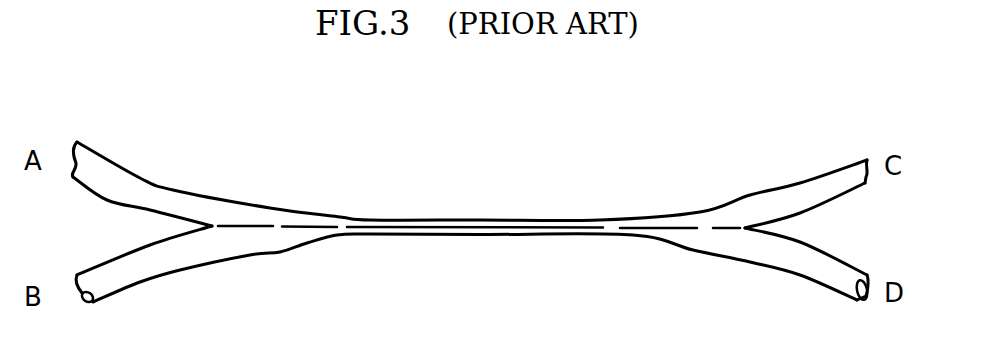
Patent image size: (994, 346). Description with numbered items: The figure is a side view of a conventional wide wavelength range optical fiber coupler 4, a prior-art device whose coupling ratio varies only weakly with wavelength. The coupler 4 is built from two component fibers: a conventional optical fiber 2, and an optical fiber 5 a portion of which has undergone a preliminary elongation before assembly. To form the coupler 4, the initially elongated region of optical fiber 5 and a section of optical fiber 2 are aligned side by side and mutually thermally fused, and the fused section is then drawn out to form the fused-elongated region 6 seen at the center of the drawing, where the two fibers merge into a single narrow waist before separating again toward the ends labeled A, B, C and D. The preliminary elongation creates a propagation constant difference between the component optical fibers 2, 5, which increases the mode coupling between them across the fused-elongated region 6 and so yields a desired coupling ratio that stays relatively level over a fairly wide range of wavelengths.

The optical fiber 2 is at (753, 197).
The wide wavelength range optical fiber coupler 4 is at (599, 183).
The optical fiber 5 is at (760, 267).
The fused-elongated region 6 is at (550, 237).